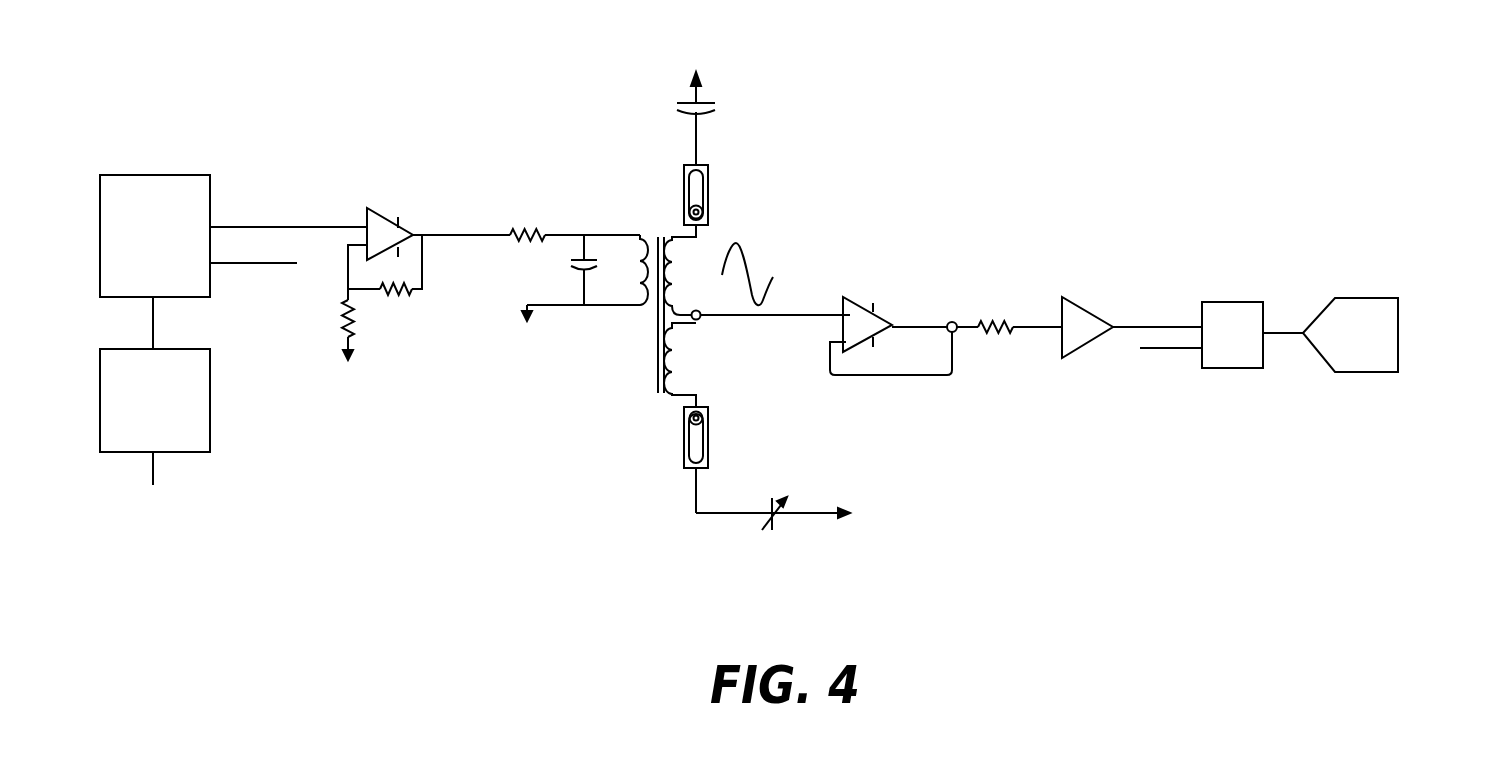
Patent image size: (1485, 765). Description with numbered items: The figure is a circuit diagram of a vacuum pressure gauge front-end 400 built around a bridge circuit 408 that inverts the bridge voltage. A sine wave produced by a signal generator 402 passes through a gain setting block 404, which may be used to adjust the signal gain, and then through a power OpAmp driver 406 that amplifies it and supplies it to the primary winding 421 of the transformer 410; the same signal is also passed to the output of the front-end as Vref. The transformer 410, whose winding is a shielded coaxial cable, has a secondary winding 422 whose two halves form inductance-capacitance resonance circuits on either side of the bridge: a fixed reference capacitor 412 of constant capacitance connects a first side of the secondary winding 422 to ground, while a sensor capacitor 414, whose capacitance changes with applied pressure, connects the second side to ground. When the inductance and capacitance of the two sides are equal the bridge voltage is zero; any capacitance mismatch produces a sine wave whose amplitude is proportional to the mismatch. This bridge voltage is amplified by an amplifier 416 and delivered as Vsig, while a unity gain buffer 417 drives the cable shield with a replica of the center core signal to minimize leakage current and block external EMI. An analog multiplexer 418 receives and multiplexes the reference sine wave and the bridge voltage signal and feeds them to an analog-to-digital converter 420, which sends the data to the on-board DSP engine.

The vacuum pressure gauge front-end 400 is at (205, 86).
The signal generator 402 is at (209, 373).
The gain setting block 404 is at (165, 175).
The power OpAmp driver 406 is at (378, 233).
The bridge circuit 408 is at (851, 192).
The transformer 410 is at (683, 281).
The reference capacitor 412 is at (697, 93).
The sensor capacitor 414 is at (747, 512).
The amplifier 416 is at (860, 297).
The unity gain buffer 417 is at (1075, 302).
The analog multiplexer 418 is at (1227, 302).
The analog-to-digital converter 420 is at (1343, 298).
The primary winding 421 is at (638, 235).
The secondary winding 422 is at (683, 270).